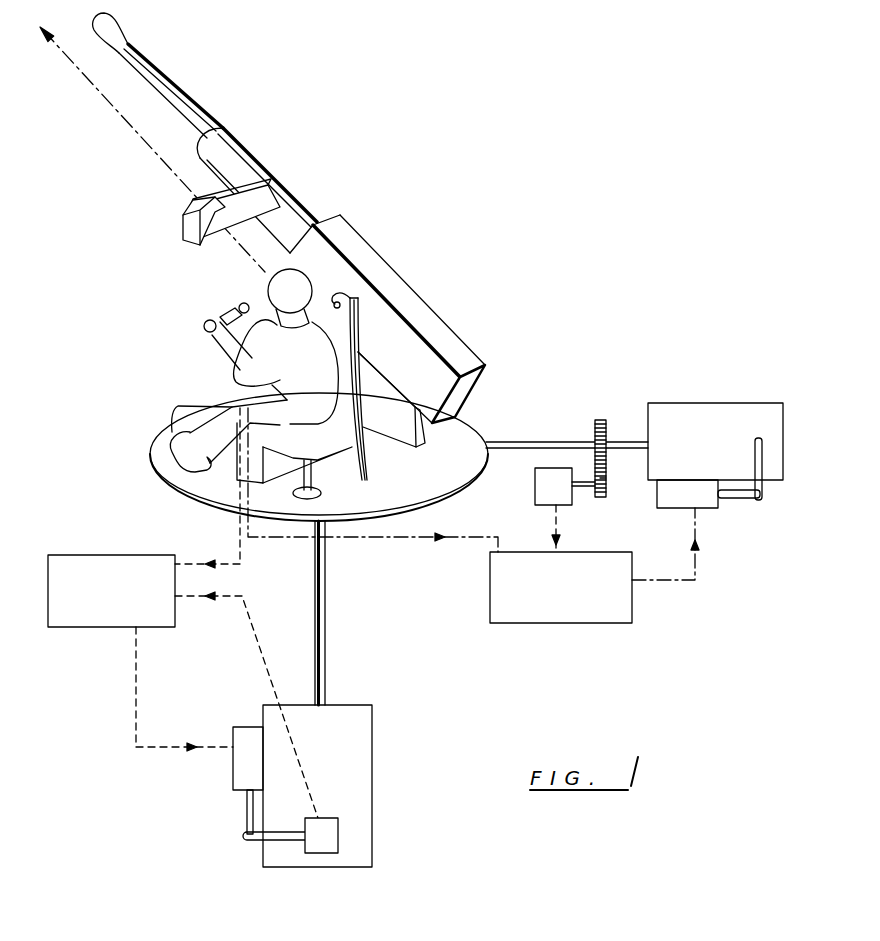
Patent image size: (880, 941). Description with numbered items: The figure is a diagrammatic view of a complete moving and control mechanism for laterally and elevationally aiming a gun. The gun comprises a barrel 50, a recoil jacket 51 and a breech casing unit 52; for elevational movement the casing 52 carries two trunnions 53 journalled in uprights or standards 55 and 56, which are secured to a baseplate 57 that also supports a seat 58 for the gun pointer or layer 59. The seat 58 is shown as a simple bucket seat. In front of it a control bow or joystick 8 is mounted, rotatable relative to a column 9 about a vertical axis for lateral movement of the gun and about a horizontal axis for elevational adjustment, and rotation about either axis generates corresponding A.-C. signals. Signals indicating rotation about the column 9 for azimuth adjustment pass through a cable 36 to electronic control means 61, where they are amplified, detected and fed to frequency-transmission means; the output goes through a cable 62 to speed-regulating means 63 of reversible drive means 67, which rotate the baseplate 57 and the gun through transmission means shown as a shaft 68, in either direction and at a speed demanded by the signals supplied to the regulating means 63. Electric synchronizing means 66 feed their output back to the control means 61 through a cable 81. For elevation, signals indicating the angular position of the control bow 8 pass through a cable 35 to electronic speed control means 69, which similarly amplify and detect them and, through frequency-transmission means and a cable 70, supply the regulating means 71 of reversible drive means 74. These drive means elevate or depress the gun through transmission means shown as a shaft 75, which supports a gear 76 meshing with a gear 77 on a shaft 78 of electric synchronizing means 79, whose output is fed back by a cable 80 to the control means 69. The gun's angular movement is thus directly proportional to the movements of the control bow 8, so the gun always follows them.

The control bow 8 is at (244, 306).
The column 9 is at (252, 385).
The cable 35 is at (400, 540).
The cable 36 is at (243, 556).
The barrel 50 is at (212, 120).
The recoil jacket 51 is at (288, 187).
The breech casing unit 52 is at (432, 322).
The trunnion 53 is at (335, 298).
The upright 55 is at (350, 462).
The upright 56 is at (409, 440).
The baseplate 57 is at (457, 490).
The seat 58 is at (313, 483).
The gun pointer 59 is at (207, 432).
The electronic control means 61 is at (120, 563).
The cable 62 is at (136, 682).
The speed-regulating means 63 is at (233, 814).
The electric synchronizing means 66 is at (332, 843).
The reversible drive means 67 is at (360, 763).
The shaft 68 is at (327, 652).
The electronic speed control means 69 is at (563, 623).
The cable 70 is at (695, 570).
The regulating means 71 is at (710, 499).
The reversible drive means 74 is at (712, 413).
The shaft 75 is at (535, 443).
The gear 76 is at (606, 423).
The gear 77 is at (608, 478).
The shaft 78 is at (585, 487).
The electric synchronizing means 79 is at (535, 487).
The cable 80 is at (556, 525).
The cable 81 is at (258, 640).